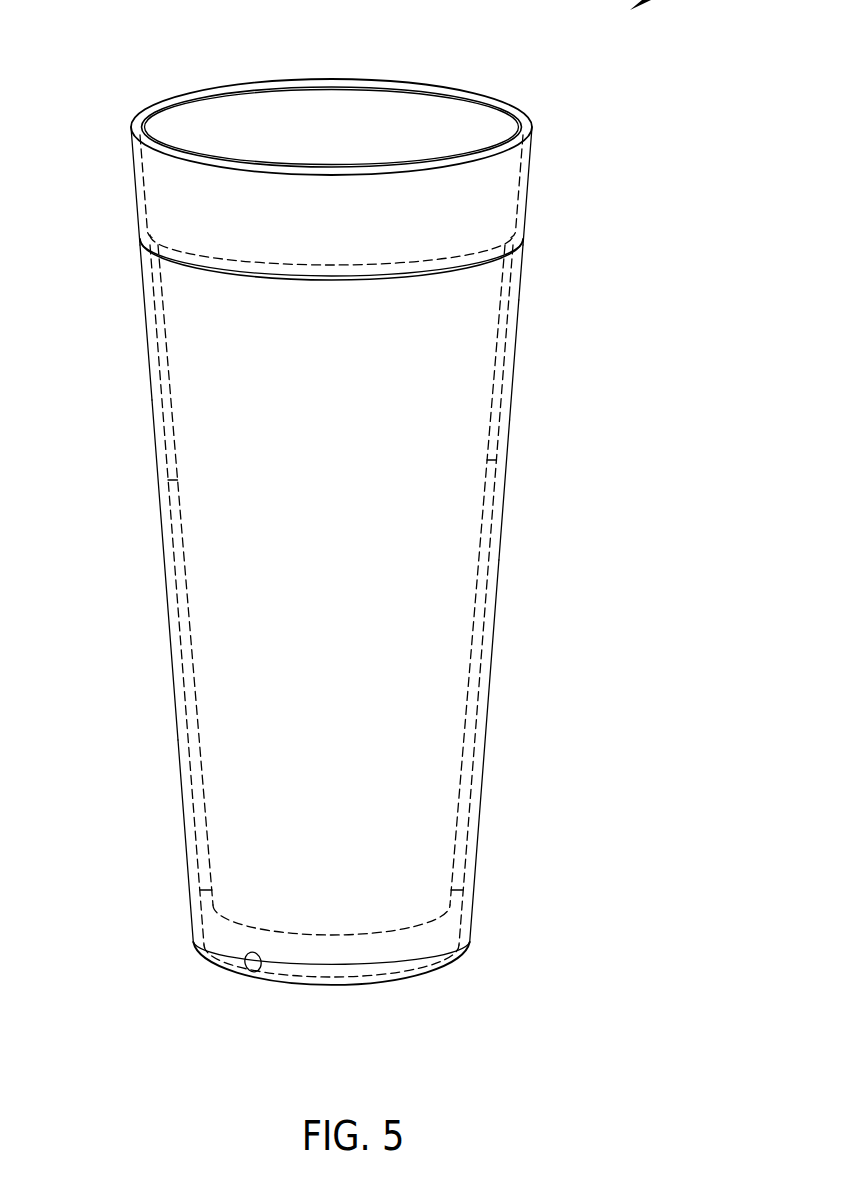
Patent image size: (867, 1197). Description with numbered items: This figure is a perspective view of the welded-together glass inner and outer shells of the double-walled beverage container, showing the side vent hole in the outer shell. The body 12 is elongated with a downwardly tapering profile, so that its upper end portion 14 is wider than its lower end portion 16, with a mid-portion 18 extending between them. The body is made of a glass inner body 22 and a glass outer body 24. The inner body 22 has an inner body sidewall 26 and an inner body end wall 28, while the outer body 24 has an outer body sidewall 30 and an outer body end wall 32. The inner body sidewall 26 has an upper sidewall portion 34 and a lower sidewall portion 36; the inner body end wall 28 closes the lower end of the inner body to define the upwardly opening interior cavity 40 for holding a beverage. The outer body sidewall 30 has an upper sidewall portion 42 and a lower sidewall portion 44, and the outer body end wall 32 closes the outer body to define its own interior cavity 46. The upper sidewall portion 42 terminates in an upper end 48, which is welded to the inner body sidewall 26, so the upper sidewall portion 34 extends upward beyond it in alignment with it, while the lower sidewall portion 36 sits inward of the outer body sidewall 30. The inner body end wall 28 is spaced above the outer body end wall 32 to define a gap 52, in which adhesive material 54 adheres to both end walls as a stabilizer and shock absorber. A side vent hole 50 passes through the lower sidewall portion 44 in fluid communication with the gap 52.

The body 12 is at (520, 290).
The upper end portion 14 is at (528, 186).
The lower end portion 16 is at (473, 905).
The mid-portion 18 is at (510, 408).
The inner body 22 is at (497, 460).
The outer body 24 is at (500, 548).
The inner body sidewall 26 is at (188, 593).
The inner body end wall 28 is at (372, 935).
The outer body sidewall 30 is at (177, 726).
The outer body end wall 32 is at (427, 980).
The upper sidewall portion 34 is at (134, 192).
The lower sidewall portion 36 is at (177, 480).
The interior cavity 40 is at (326, 140).
The upper sidewall portion 42 is at (151, 386).
The lower sidewall portion 44 is at (188, 853).
The interior cavity 46 is at (193, 784).
The upper end 48 is at (141, 249).
The side vent hole 50 is at (258, 972).
The gap 52 is at (445, 928).
The adhesive material 54 is at (442, 940).